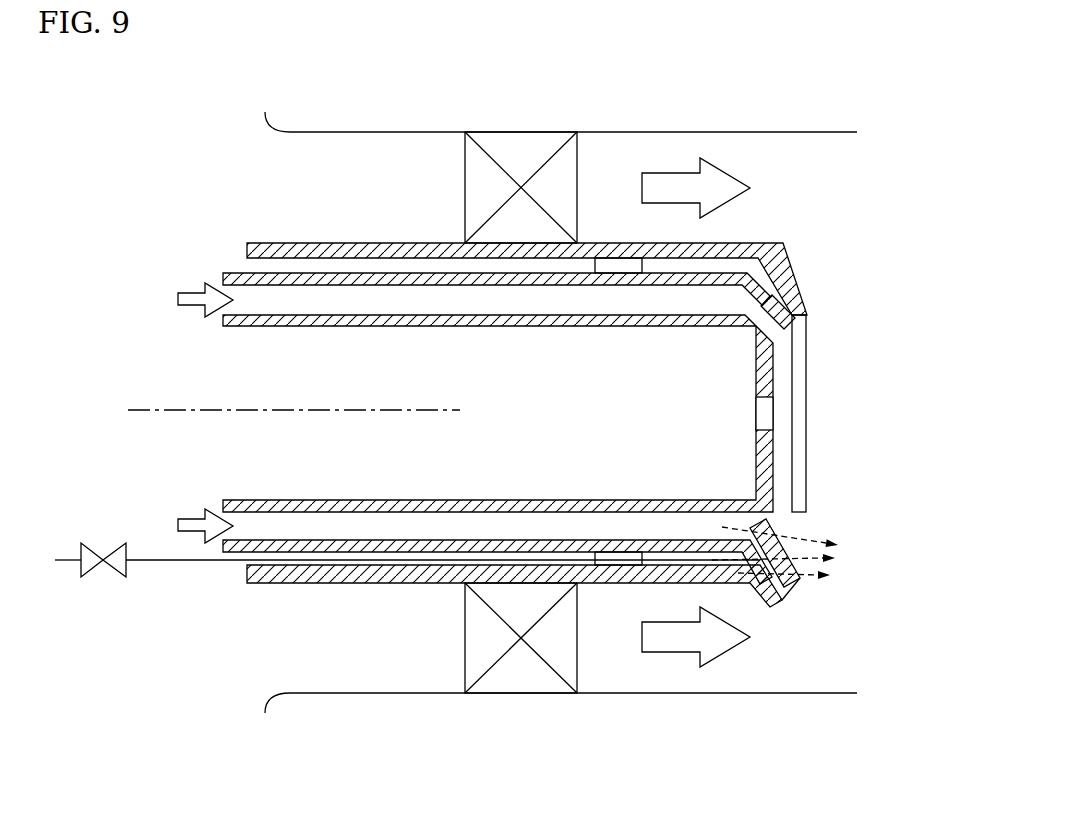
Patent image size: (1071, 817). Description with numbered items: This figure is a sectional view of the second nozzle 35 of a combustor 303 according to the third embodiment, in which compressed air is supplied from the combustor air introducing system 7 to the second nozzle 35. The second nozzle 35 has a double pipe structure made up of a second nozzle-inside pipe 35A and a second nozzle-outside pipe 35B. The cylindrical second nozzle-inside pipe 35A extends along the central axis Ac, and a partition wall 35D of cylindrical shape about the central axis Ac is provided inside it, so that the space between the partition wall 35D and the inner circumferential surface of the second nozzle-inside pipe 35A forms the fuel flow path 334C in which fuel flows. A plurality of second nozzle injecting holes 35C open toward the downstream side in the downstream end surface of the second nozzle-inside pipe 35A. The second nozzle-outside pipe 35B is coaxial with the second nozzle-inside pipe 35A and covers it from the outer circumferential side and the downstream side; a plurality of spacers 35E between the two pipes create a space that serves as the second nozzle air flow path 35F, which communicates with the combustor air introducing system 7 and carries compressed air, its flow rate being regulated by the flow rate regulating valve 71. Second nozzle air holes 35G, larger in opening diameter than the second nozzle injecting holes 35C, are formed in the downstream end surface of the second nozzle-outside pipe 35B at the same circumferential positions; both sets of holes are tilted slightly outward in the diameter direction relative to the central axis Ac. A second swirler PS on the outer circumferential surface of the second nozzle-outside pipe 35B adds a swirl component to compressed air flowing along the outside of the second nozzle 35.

The combustor 303 is at (205, 178).
The second nozzle 35 is at (868, 276).
The second nozzle-inside pipe 35A is at (324, 547).
The second nozzle-outside pipe 35B is at (377, 573).
The second nozzle injecting holes 35C is at (820, 573).
The partition wall 35D is at (418, 500).
The spacers 35E is at (617, 258).
The second nozzle air flow path 35F is at (382, 265).
The second nozzle air holes 35G is at (808, 540).
The fuel flow path 334C is at (280, 300).
The combustor air introducing system 7 is at (398, 557).
The flow rate regulating valve 71 is at (113, 578).
The central axis Ac is at (128, 410).
The second swirler PS is at (502, 685).